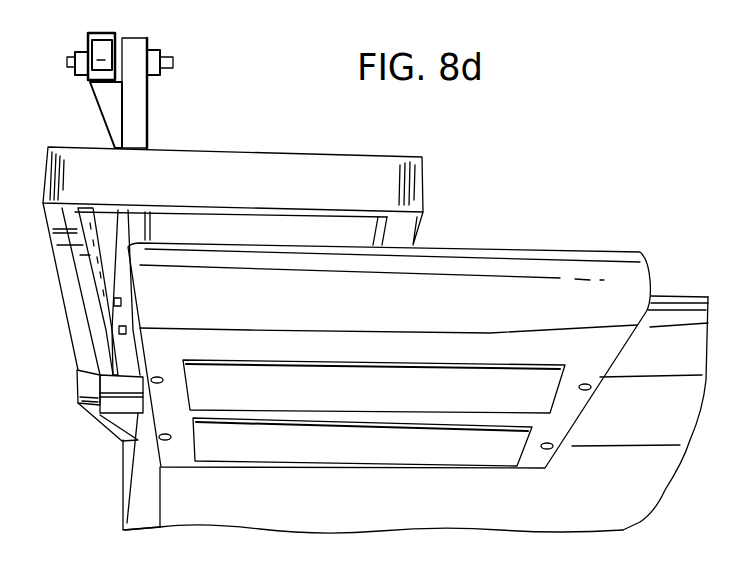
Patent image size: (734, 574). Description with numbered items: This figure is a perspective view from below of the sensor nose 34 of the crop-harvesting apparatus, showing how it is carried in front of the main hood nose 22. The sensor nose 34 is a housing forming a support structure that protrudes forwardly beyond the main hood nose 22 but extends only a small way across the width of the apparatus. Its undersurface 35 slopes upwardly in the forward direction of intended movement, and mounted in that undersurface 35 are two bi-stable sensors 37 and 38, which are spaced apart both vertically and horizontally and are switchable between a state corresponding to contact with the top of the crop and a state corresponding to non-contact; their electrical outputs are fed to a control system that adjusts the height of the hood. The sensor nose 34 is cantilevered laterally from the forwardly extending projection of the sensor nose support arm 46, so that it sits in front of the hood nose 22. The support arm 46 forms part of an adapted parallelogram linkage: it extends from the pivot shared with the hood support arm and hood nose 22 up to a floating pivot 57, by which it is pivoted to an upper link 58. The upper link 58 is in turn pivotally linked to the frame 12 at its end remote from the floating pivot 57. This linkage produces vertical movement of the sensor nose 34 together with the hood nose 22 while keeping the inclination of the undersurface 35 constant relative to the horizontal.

The frame 12 is at (110, 423).
The main hood nose 22 is at (416, 508).
The sensor nose 34 is at (570, 270).
The undersurface 35 is at (175, 450).
The bi-stable sensor 37 is at (542, 402).
The bi-stable sensor 38 is at (523, 472).
The sensor nose support arm 46 is at (142, 110).
The floating pivot 57 is at (148, 52).
The upper link 58 is at (102, 92).